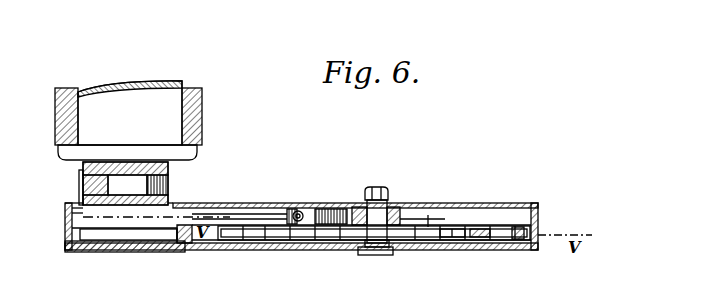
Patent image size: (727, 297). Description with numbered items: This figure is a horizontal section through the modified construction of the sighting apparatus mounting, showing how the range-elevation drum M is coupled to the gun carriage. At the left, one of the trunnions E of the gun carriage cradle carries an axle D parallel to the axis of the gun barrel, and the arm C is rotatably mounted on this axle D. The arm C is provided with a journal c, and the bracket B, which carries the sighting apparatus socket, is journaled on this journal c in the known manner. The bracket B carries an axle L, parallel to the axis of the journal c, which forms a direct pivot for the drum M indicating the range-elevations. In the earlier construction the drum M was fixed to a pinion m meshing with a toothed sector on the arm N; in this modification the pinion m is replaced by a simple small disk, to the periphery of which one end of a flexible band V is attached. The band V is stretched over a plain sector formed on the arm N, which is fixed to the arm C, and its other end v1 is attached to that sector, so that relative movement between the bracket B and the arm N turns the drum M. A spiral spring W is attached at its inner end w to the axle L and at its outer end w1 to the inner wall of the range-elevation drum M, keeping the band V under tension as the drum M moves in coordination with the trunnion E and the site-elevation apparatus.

The trunnion E is at (148, 90).
The axle D is at (140, 185).
The bracket B is at (263, 246).
The arm C is at (123, 207).
The journal c is at (153, 238).
The flexible band V is at (339, 212).
The other end of the flexible band v1 is at (300, 211).
The arm N is at (256, 214).
The axle L is at (385, 210).
The inner end of the spiral spring w is at (380, 248).
The pinion m is at (405, 204).
The range-elevation drum M is at (498, 226).
The spiral spring W is at (484, 246).
The outer end of the spiral spring w1 is at (527, 248).